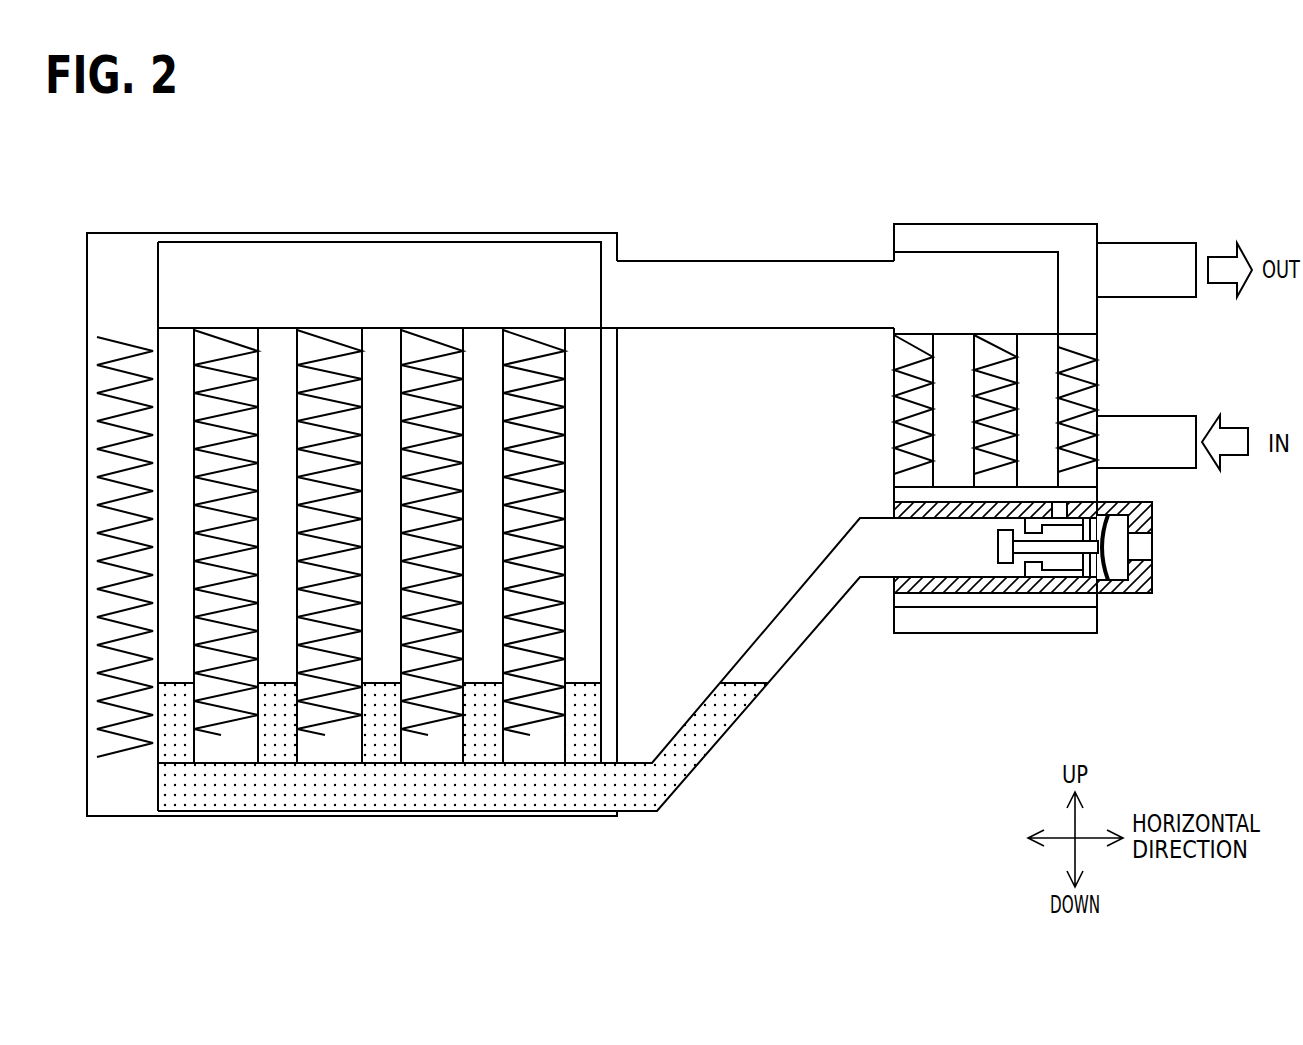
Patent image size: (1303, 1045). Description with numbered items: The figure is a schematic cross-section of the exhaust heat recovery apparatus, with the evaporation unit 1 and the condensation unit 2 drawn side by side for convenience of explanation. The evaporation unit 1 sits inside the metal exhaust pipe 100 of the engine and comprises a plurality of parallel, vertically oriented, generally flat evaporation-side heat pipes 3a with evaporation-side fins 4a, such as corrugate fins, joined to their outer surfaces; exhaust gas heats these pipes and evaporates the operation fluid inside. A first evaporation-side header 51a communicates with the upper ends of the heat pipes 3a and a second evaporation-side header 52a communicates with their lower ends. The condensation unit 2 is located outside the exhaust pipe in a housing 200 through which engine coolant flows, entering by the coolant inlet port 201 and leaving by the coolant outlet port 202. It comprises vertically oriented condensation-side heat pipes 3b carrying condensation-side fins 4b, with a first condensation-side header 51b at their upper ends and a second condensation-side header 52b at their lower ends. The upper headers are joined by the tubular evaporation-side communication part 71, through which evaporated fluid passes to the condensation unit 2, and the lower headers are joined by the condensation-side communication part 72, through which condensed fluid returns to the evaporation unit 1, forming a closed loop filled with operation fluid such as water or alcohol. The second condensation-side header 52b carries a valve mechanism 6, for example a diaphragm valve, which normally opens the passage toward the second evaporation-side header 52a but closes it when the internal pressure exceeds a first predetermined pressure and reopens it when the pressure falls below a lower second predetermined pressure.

The exhaust pipe 100 is at (117, 232).
The housing 200 is at (1076, 222).
The evaporation unit 1 is at (349, 456).
The condensation unit 2 is at (1042, 314).
The evaporation-side heat pipes 3a is at (362, 330).
The evaporation-side fins 4a is at (421, 330).
The condensation-side heat pipes 3b is at (1062, 346).
The condensation-side fins 4b is at (1062, 392).
The first evaporation-side header 51a is at (512, 262).
The second evaporation-side header 52a is at (234, 795).
The first condensation-side header 51b is at (962, 282).
The second condensation-side header 52b is at (972, 607).
The evaporation-side communication part 71 is at (703, 280).
The condensation-side communication part 72 is at (797, 632).
The valve mechanism 6 is at (1069, 560).
The coolant inlet port 201 is at (1170, 456).
The coolant outlet port 202 is at (1148, 252).